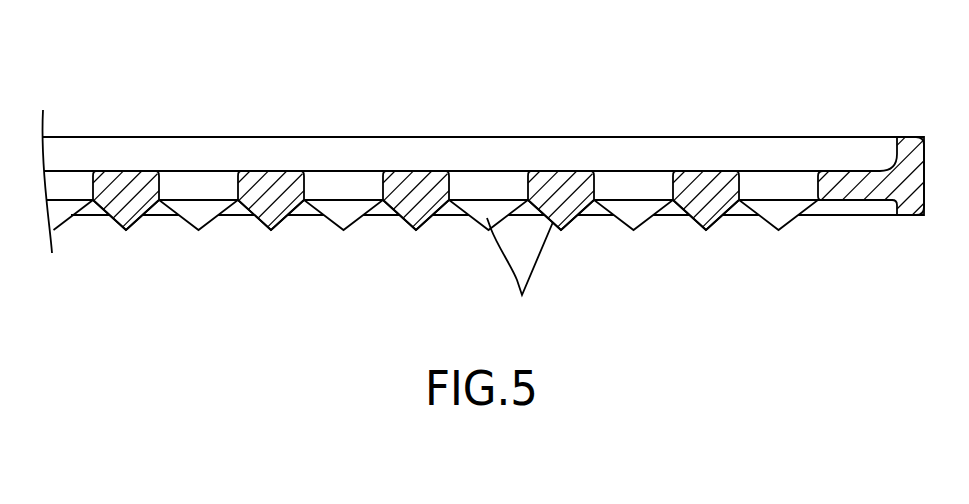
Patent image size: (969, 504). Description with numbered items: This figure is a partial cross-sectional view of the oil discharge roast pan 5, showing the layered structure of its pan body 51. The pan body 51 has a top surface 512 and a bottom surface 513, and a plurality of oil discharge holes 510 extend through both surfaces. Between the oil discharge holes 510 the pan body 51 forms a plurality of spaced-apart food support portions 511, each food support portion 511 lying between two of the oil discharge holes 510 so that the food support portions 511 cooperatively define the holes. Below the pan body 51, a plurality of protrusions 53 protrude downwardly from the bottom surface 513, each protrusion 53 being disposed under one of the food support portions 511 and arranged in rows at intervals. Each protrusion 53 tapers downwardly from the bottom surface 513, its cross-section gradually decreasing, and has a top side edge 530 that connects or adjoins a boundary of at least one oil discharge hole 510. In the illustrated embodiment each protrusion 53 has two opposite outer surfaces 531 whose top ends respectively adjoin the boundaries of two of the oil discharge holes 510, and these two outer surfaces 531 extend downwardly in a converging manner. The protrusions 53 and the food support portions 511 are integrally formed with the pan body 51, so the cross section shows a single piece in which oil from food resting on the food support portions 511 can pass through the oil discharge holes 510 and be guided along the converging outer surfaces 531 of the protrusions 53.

The oil discharge roast pan 5 is at (504, 174).
The pan body 51 is at (916, 137).
The oil discharge holes 510 is at (633, 183).
The food support portions 511 is at (560, 188).
The top surface 512 is at (860, 168).
The bottom surface 513 is at (850, 202).
The protrusions 53 is at (780, 227).
The top side edge 530 is at (745, 200).
The outer surfaces 531 is at (687, 216).